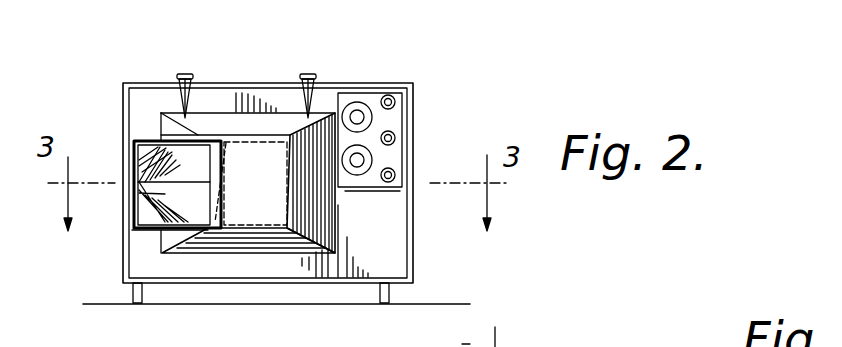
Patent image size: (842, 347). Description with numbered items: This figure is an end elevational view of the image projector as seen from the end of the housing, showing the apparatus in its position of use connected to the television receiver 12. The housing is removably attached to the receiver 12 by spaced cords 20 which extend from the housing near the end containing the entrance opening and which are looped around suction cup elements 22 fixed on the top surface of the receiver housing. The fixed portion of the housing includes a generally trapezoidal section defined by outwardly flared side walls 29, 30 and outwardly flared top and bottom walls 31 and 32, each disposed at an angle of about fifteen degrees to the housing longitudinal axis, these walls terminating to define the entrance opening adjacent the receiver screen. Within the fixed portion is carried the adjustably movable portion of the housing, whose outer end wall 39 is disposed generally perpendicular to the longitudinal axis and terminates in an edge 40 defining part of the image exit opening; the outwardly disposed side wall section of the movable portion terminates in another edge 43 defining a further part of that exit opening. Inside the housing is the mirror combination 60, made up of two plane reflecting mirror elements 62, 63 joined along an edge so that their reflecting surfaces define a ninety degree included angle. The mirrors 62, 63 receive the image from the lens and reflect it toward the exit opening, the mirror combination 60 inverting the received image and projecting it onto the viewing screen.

The television receiver 12 is at (441, 114).
The cords 20 is at (180, 97).
The suction cup elements 22 is at (185, 73).
The side wall 29 is at (314, 208).
The side wall 30 is at (170, 237).
The top wall 31 is at (233, 117).
The bottom wall 32 is at (262, 240).
The outer end wall 39 is at (248, 210).
The edge 40 is at (217, 225).
The edge 43 is at (136, 170).
The mirror combination 60 is at (126, 223).
The reflecting mirror element 62 is at (134, 165).
The reflecting mirror element 63 is at (147, 213).